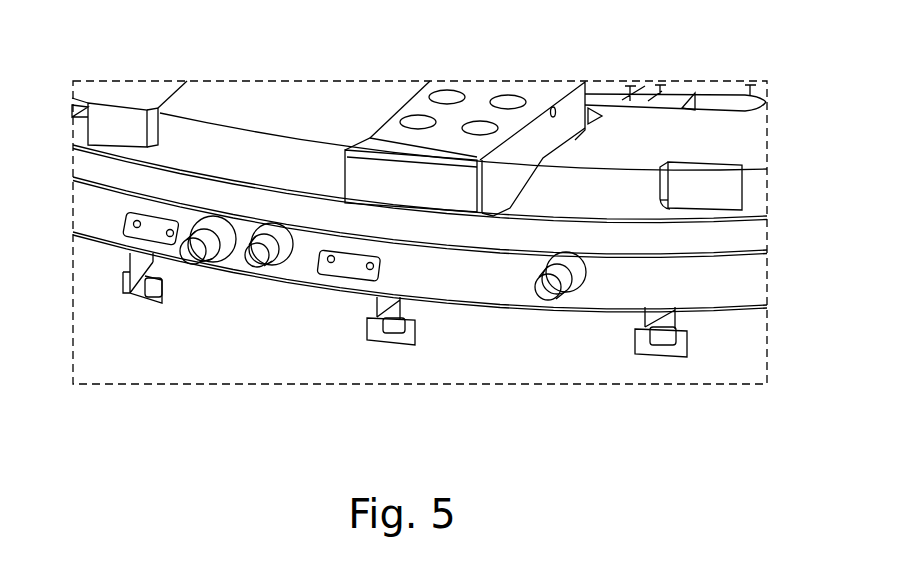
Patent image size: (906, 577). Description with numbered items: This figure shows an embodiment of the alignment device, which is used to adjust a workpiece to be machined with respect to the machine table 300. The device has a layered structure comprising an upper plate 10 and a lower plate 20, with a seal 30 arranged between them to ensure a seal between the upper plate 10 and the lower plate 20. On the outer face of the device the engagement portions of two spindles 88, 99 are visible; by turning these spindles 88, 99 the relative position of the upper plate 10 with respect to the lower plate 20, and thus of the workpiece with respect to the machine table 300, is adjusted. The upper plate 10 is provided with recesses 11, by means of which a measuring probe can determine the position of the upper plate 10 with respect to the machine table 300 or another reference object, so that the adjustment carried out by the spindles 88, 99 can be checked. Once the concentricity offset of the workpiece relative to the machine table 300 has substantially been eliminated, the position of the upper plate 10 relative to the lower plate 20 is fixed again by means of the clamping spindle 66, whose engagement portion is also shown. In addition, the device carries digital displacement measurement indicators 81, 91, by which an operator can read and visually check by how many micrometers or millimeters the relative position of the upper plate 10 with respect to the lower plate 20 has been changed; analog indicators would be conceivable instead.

The machine table 300 is at (724, 394).
The upper plate 10 is at (622, 138).
The recesses 11 is at (112, 120).
The seal 30 is at (752, 236).
The lower plate 20 is at (752, 288).
The spindle 99 is at (148, 232).
The digital displacement measurement indicator 81 is at (352, 268).
The spindle 88 is at (270, 266).
The clamping spindle 66 is at (557, 301).
The digital displacement measurement indicator 91 is at (128, 294).